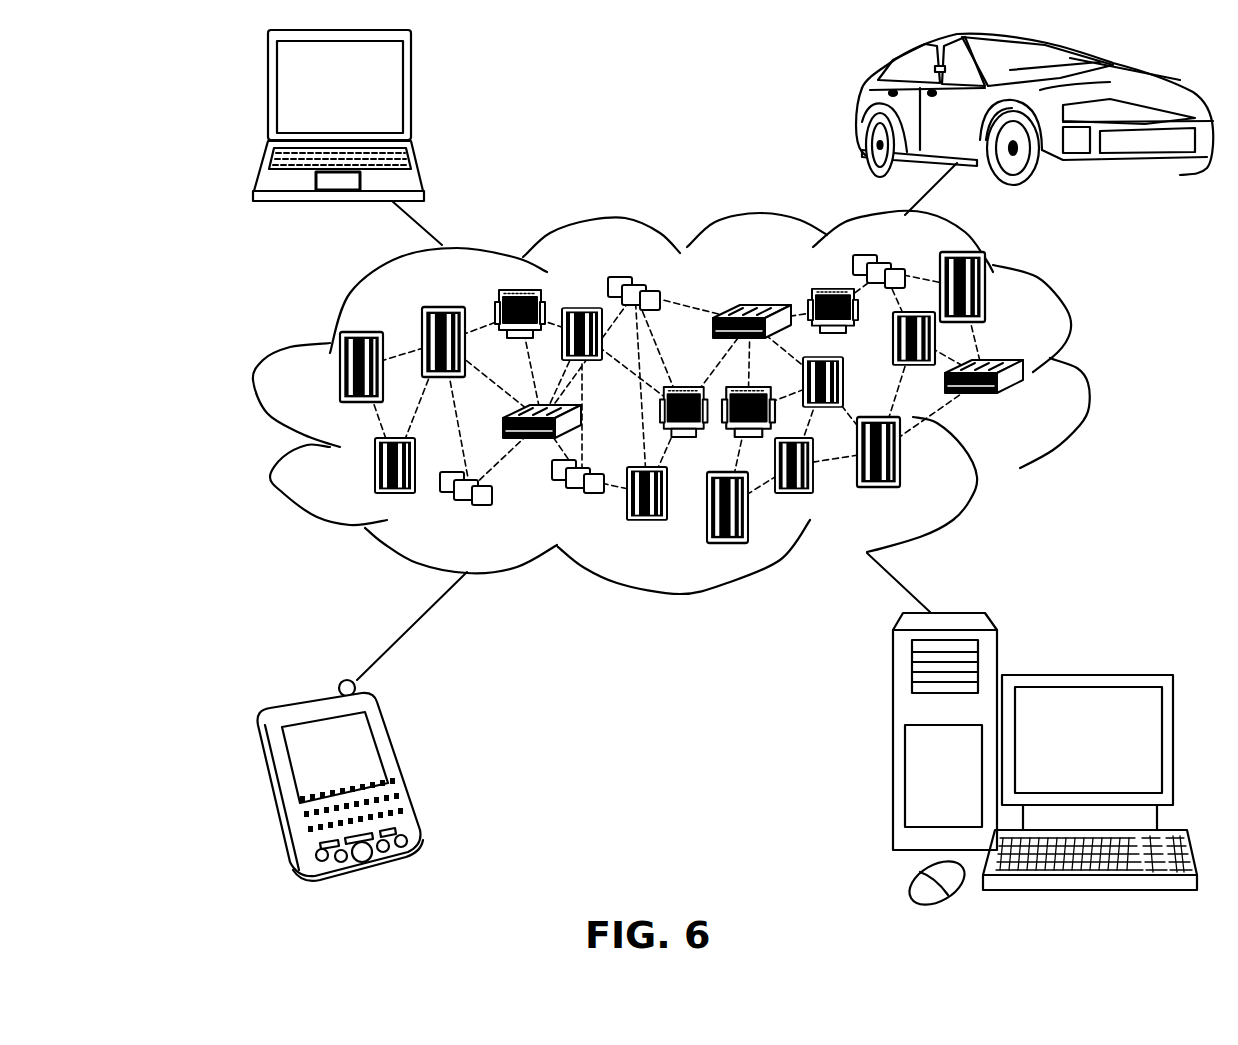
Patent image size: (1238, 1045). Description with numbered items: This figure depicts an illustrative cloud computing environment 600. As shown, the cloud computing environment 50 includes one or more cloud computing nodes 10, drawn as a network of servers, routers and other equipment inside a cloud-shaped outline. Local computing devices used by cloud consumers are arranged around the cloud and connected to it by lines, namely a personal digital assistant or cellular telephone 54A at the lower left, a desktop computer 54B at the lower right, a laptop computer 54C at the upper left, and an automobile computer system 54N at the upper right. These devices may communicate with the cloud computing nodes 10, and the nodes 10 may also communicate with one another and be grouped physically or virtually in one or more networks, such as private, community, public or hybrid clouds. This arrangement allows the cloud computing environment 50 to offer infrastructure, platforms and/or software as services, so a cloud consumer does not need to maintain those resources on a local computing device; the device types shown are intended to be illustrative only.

The cloud computing environment 600 is at (158, 95).
The cloud computing environment 50 is at (1086, 375).
The cloud computing node 10 is at (1040, 409).
The personal digital assistant or cellular telephone 54A is at (402, 771).
The desktop computer 54B is at (1087, 673).
The laptop computer 54C is at (414, 93).
The automobile computer system 54N is at (860, 110).